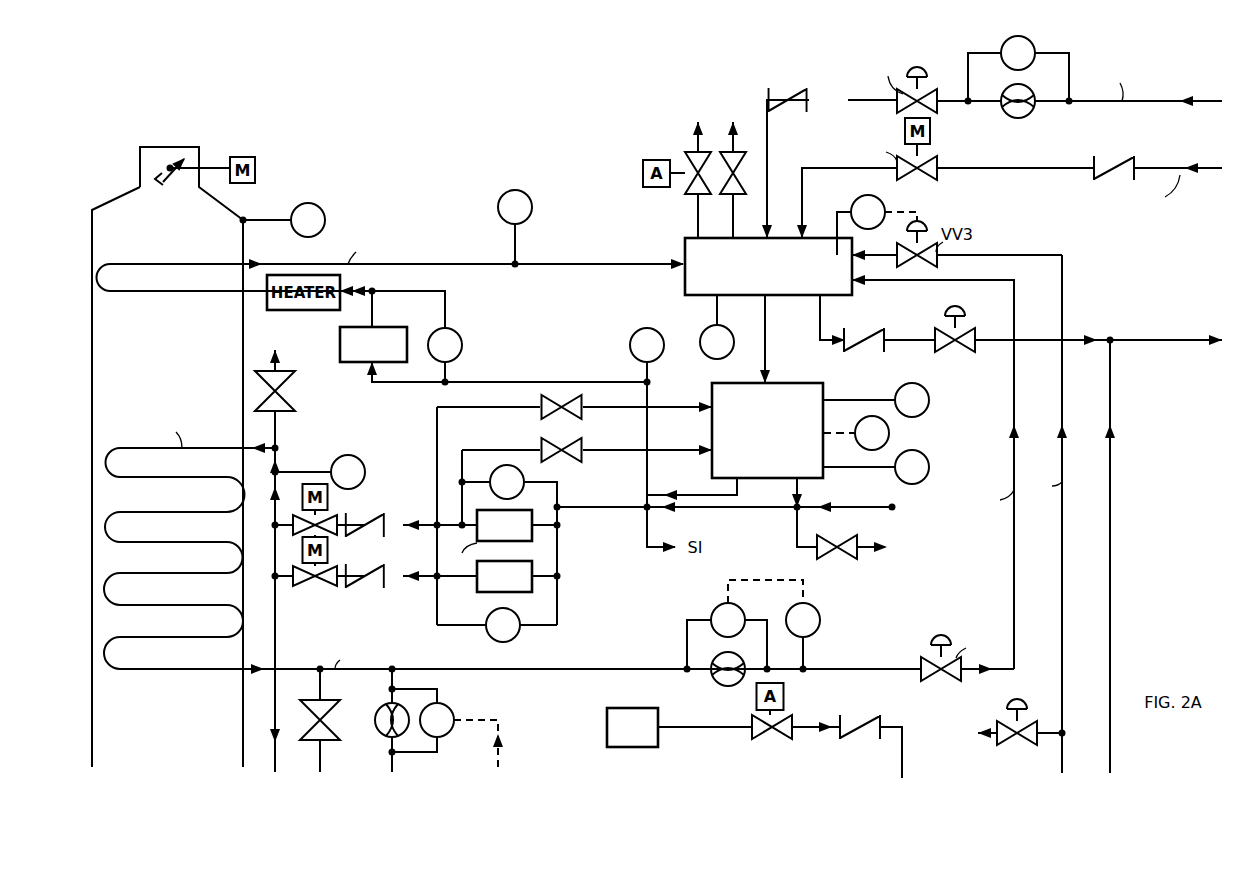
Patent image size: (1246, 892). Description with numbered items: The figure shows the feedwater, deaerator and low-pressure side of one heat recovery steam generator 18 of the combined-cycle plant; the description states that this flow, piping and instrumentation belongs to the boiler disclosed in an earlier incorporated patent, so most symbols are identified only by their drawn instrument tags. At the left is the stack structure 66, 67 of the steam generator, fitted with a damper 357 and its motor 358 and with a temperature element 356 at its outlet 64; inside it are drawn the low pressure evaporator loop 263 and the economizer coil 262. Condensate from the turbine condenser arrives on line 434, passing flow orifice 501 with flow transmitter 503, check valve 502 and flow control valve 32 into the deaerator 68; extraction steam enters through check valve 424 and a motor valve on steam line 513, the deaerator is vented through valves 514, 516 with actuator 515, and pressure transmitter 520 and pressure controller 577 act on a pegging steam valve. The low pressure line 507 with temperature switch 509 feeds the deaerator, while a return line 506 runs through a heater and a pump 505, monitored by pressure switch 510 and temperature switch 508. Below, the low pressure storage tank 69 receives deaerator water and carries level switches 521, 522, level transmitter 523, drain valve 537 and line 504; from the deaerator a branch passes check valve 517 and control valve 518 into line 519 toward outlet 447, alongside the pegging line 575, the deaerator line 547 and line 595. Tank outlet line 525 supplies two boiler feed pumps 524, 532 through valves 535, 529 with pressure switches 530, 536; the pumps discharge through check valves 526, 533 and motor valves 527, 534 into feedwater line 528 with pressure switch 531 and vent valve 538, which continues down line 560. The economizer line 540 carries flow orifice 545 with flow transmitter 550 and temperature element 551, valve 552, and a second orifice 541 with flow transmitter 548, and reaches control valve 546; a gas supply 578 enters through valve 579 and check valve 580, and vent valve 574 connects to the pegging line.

The heat recovery steam generator 18 is at (494, 141).
The flow control valve 32 is at (925, 70).
The low pressure evaporator outlet 64 is at (250, 213).
The heat recovery steam generator 66 is at (160, 446).
The low pressure evaporator drum 67 is at (140, 172).
The deaerator 68 is at (685, 246).
The low pressure storage tank 69 is at (790, 383).
The economizer coil EK 262 is at (170, 672).
The low pressure evaporator loop LPEV 263 is at (185, 292).
The temperature element 356 is at (321, 212).
The damper 357 is at (168, 182).
The damper motor 358 is at (240, 157).
The extraction steam check valve 424 is at (1188, 168).
The condensate line 434 is at (1150, 101).
The outlet line 447 is at (1158, 340).
The flow orifice 501 is at (1003, 113).
The check valve 502 is at (816, 92).
The flow transmitter 503 is at (1034, 50).
The recirculation line 504 is at (698, 495).
The recirculation pump 505 is at (347, 362).
The heater line 506 is at (345, 291).
The low pressure line LPL 507 is at (588, 264).
The temperature switch 508 is at (636, 333).
The temperature switch 509 is at (498, 208).
The pressure switch 510 is at (461, 340).
The steam line 513 is at (815, 168).
The vent valve 514 is at (688, 158).
The actuator 515 is at (643, 172).
The vent valve 516 is at (740, 190).
The check valve 517 is at (864, 331).
The control valve 518 is at (968, 330).
The line 519 is at (1030, 340).
The pressure transmitter 520 is at (705, 334).
The level switch 521 is at (930, 401).
The level switch 522 is at (890, 433).
The level transmitter 523 is at (930, 468).
The boiler feed pump 524 is at (545, 521).
The tank outlet line 525 is at (735, 510).
The check valve 526 is at (398, 535).
The motor operated valve 527 is at (340, 520).
The feedwater line 528 is at (272, 493).
The valve 529 is at (583, 450).
The pressure switch 530 is at (500, 466).
The pressure switch 531 is at (355, 456).
The boiler feed pump 532 is at (545, 565).
The check valve 533 is at (386, 590).
The motor operated valve 534 is at (310, 588).
The valve 535 is at (583, 407).
The pressure switch 536 is at (487, 638).
The drain valve 537 is at (840, 560).
The vent valve 538 is at (295, 396).
The economizer line EKL 540 is at (298, 669).
The flow orifice 541 is at (377, 731).
The flow orifice 545 is at (710, 681).
The control valve VV2 546 is at (926, 648).
The deaerator line DAL 547 is at (1014, 593).
The flow transmitter 548 is at (445, 705).
The flow transmitter 550 is at (712, 613).
The temperature element 551 is at (820, 614).
The valve 552 is at (333, 716).
The line 560 is at (277, 716).
The vent valve 574 is at (1000, 720).
The pegging steam line PGL 575 is at (1062, 603).
The pressure controller 577 is at (851, 208).
The nitrogen gas supply 578 is at (607, 722).
The valve 579 is at (752, 727).
The check valve 580 is at (864, 722).
The line 595 is at (1110, 605).